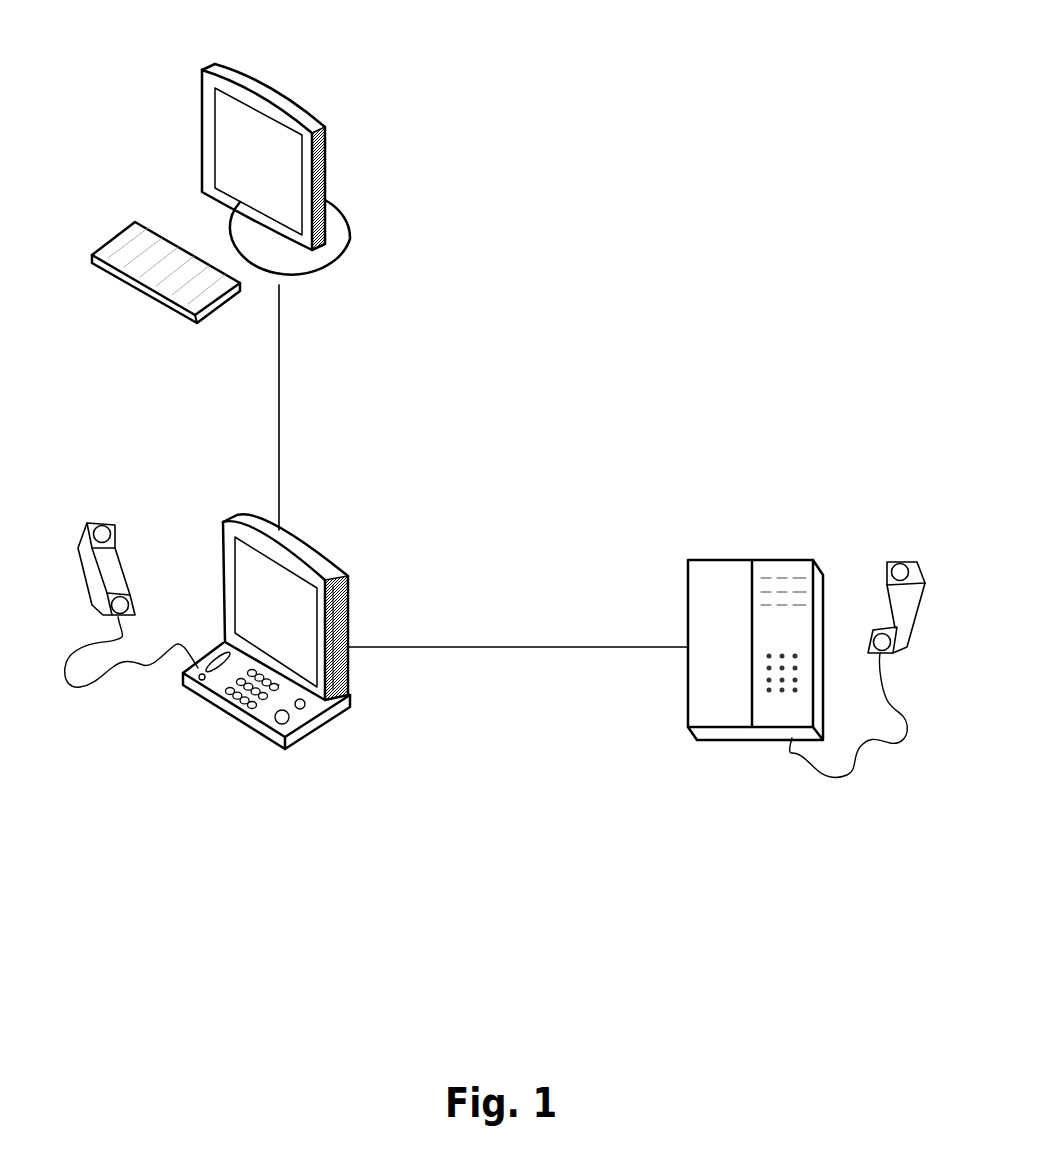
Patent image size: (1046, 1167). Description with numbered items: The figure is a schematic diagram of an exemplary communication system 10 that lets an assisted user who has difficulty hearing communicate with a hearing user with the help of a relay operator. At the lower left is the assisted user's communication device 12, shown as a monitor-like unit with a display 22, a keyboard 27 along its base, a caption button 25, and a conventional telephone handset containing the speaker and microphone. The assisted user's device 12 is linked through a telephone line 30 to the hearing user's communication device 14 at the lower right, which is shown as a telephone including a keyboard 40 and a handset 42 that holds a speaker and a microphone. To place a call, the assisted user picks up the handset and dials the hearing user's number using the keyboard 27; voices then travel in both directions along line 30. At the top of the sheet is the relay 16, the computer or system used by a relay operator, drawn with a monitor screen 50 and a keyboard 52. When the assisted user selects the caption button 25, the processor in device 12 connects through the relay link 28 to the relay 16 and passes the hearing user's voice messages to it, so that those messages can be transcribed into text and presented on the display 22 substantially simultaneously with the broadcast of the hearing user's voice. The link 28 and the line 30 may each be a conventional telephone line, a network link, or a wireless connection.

The communication system 10 is at (490, 268).
The assisted user's communication device 12 is at (328, 528).
The hearing user's communication device 14 is at (810, 538).
The relay 16 is at (316, 87).
The display 22 is at (300, 613).
The caption button 25 is at (290, 718).
The keyboard 27 is at (278, 685).
The relay link 28 is at (280, 402).
The telephone line 30 is at (450, 645).
The keyboard 40 is at (785, 667).
The handset 42 is at (898, 590).
The relay display screen 50 is at (302, 177).
The relay keyboard 52 is at (142, 245).